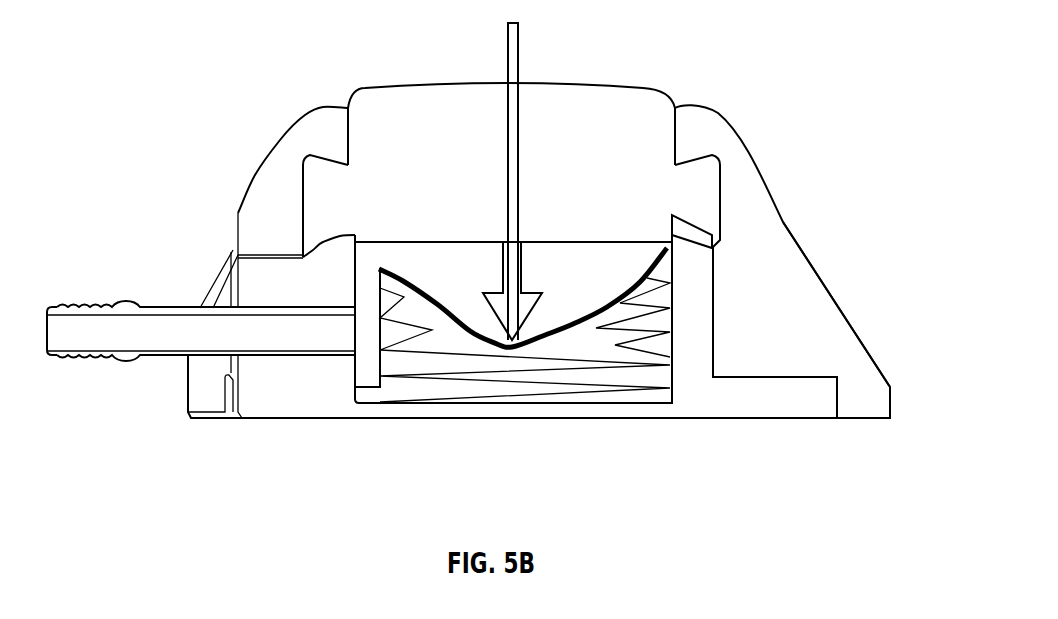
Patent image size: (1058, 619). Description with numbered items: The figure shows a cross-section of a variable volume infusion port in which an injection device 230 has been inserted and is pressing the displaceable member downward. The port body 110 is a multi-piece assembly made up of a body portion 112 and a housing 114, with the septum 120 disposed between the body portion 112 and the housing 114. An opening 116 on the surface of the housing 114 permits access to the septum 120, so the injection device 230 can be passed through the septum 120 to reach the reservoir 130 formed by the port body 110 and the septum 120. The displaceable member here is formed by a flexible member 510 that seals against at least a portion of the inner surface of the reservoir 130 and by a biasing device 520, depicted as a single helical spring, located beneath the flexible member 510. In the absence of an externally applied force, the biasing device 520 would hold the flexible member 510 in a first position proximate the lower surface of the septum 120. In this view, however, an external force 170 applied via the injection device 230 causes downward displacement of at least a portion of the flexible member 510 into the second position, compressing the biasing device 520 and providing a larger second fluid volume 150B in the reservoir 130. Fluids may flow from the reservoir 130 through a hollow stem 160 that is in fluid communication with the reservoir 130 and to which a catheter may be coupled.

The port body 110 is at (716, 106).
The opening 116 is at (302, 108).
The housing 114 is at (805, 351).
The body portion 112 is at (772, 413).
The septum 120 is at (511, 162).
The reservoir 130 is at (344, 281).
The flexible member 510 is at (443, 303).
The second fluid volume 150B is at (624, 262).
The biasing device 520 is at (558, 400).
The force 170 is at (523, 270).
The injection device 230 is at (518, 47).
The hollow stem 160 is at (143, 360).